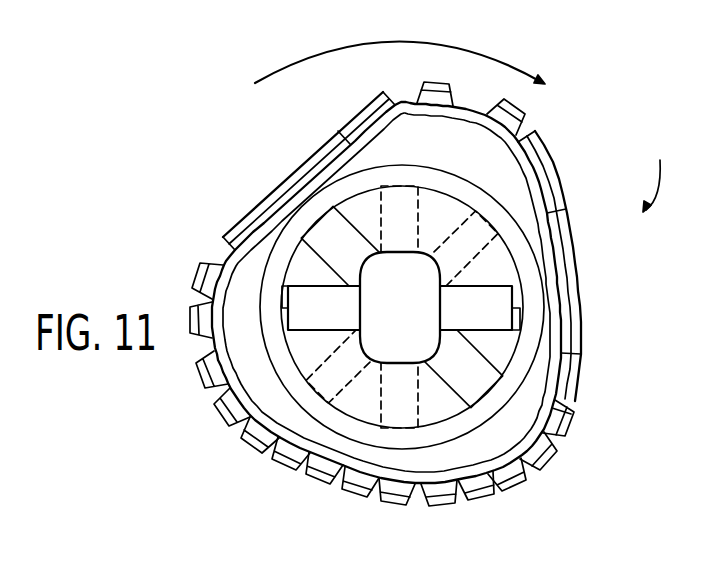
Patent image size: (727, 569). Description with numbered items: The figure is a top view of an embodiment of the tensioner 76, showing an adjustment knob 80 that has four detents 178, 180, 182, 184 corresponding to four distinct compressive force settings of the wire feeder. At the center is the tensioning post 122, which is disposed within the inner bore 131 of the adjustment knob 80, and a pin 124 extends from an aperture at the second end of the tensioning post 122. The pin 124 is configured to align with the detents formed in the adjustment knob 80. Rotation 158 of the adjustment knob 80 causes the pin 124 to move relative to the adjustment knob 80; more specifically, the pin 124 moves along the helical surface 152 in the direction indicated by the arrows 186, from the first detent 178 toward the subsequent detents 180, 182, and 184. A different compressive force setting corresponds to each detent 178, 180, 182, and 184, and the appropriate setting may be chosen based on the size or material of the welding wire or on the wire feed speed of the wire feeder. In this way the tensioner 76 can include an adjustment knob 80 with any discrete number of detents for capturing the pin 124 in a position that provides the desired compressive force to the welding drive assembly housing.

The tensioner 76 is at (658, 171).
The adjustment knob 80 is at (515, 150).
The tensioning post 122 is at (418, 321).
The pin 124 is at (490, 330).
The inner bore 131 is at (424, 252).
The helical surface 152 is at (358, 210).
The rotation 158 is at (393, 42).
The first detent 178 is at (285, 303).
The detent 180 is at (483, 234).
The detent 182 is at (402, 200).
The detent 184 is at (325, 235).
The arrows 186 is at (487, 251).